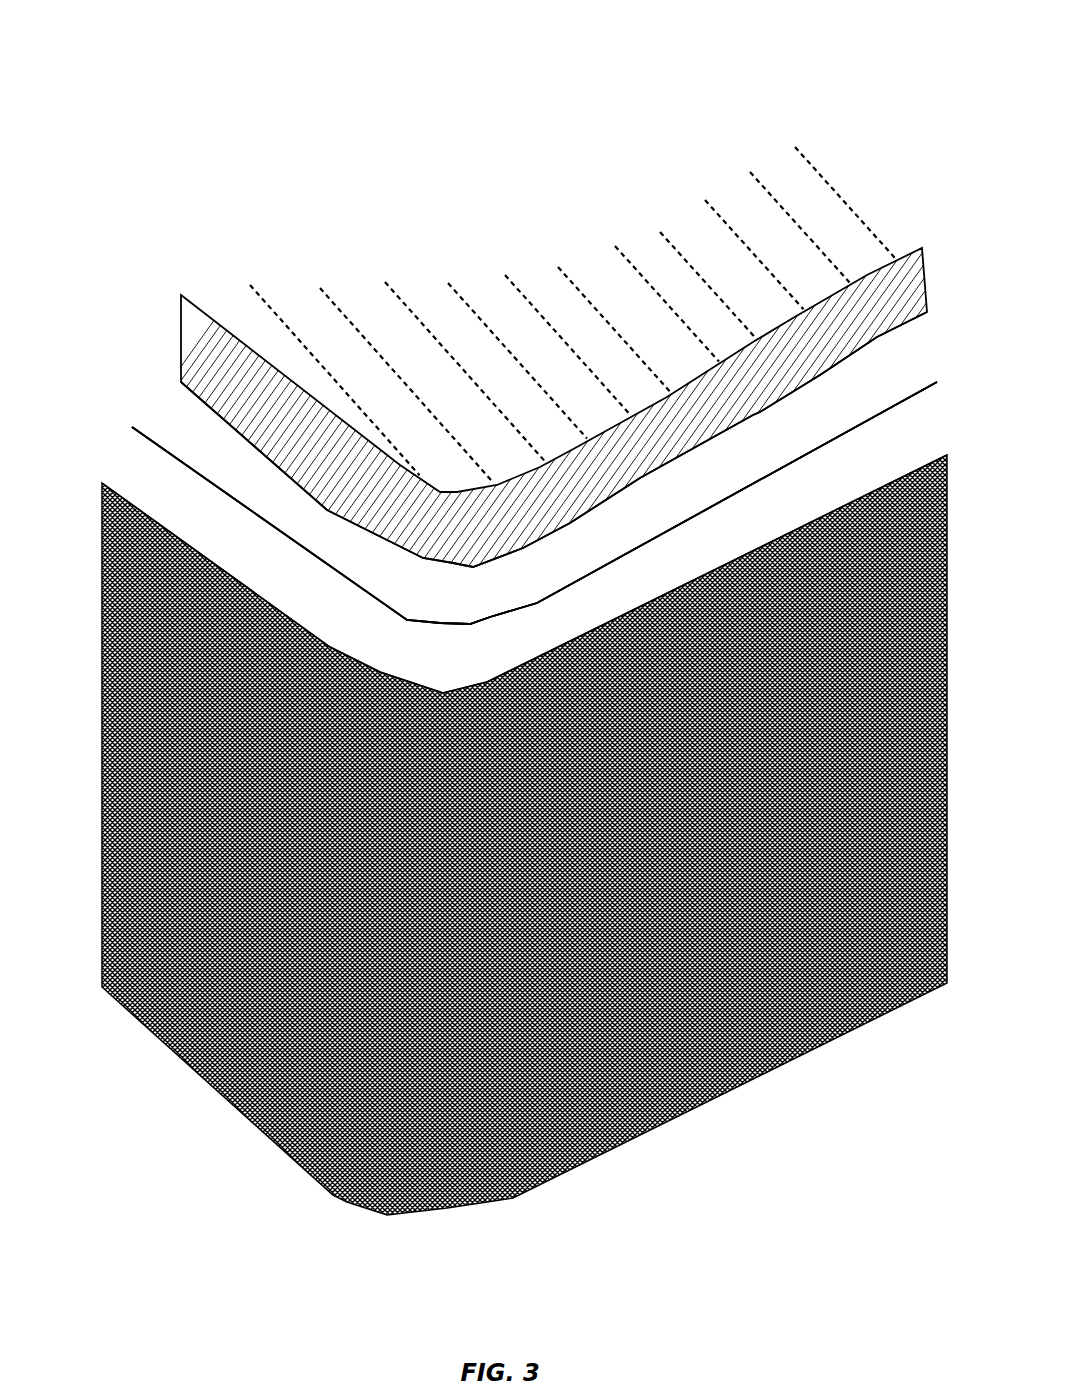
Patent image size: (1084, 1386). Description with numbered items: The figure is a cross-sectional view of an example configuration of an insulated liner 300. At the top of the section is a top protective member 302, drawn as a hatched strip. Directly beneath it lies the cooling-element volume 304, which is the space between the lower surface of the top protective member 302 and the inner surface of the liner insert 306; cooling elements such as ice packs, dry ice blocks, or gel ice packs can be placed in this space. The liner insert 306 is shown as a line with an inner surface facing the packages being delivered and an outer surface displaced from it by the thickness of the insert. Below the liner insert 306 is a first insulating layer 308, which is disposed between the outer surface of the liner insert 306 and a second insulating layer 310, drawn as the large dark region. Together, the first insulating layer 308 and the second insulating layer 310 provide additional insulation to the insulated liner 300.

The insulated liner 300 is at (120, 90).
The top protective member 302 is at (530, 424).
The cooling-element volume 304 is at (534, 468).
The liner insert 306 is at (122, 419).
The first insulating layer 308 is at (524, 537).
The second insulating layer 310 is at (524, 835).